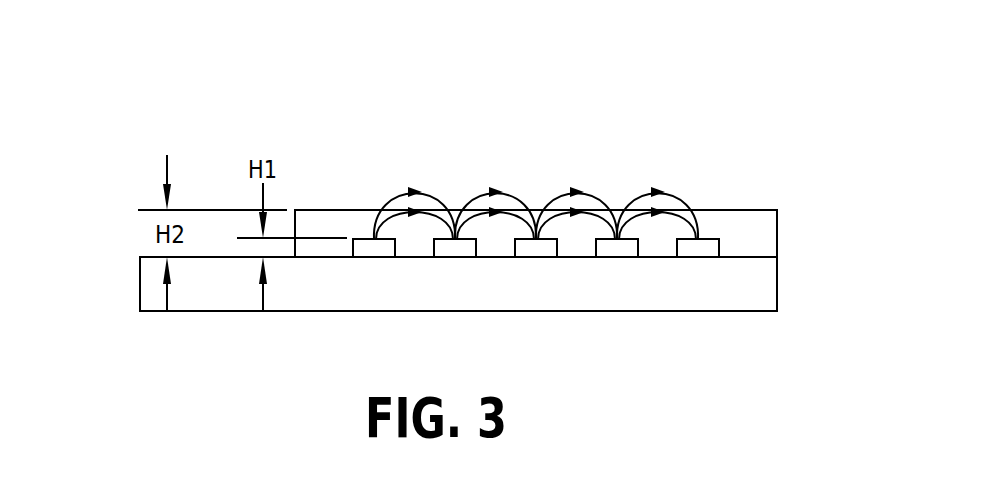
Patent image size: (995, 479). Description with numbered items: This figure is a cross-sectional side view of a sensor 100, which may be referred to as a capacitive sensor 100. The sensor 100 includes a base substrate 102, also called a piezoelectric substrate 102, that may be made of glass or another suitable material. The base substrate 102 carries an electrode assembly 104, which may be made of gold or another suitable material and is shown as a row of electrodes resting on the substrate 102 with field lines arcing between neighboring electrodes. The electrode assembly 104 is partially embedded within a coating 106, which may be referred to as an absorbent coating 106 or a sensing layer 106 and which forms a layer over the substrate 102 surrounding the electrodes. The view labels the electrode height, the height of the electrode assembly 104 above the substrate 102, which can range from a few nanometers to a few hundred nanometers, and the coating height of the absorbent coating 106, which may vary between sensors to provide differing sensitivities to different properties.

The sensor 100 is at (498, 170).
The base substrate 102 is at (708, 292).
The electrode assembly 104 is at (724, 248).
The coating 106 is at (729, 217).